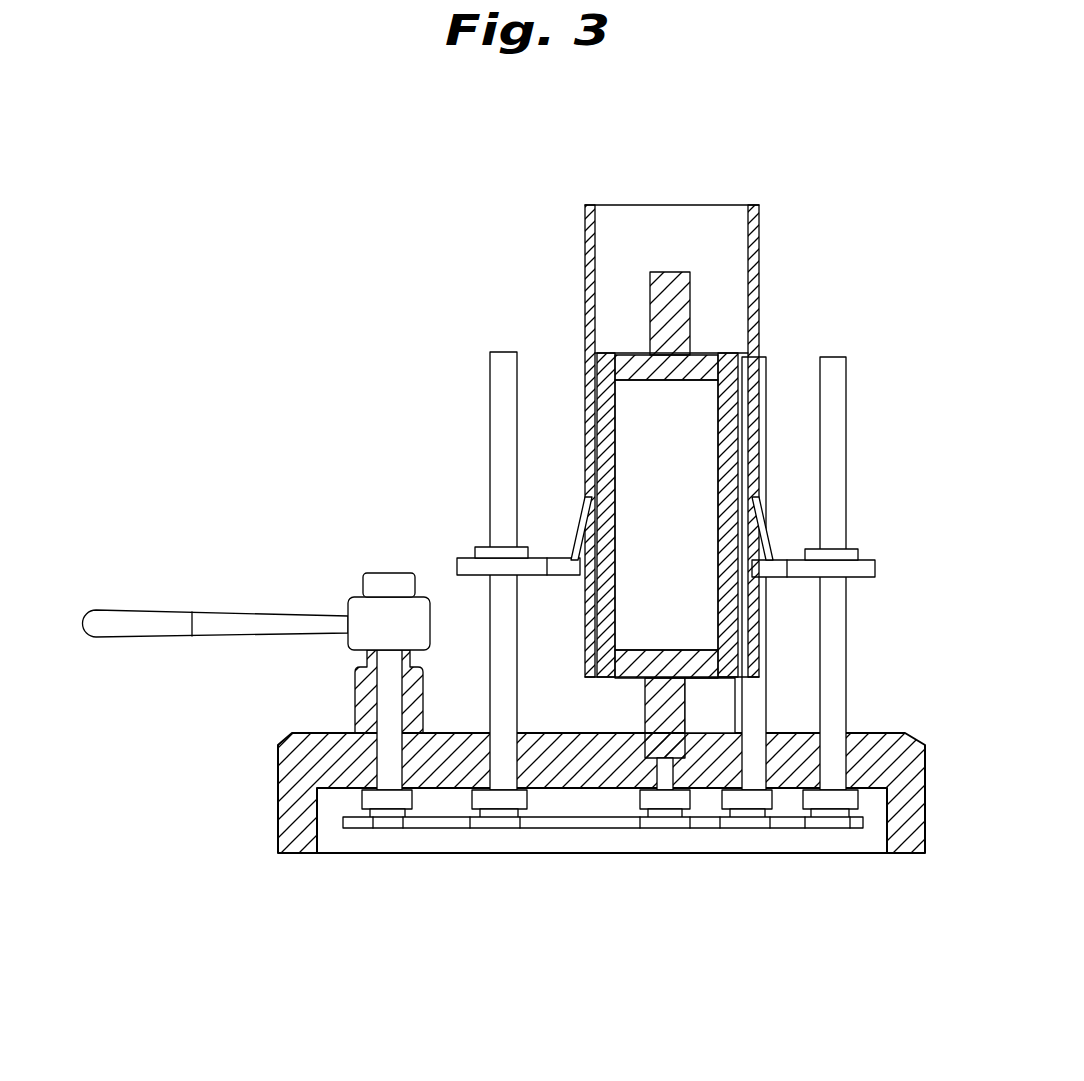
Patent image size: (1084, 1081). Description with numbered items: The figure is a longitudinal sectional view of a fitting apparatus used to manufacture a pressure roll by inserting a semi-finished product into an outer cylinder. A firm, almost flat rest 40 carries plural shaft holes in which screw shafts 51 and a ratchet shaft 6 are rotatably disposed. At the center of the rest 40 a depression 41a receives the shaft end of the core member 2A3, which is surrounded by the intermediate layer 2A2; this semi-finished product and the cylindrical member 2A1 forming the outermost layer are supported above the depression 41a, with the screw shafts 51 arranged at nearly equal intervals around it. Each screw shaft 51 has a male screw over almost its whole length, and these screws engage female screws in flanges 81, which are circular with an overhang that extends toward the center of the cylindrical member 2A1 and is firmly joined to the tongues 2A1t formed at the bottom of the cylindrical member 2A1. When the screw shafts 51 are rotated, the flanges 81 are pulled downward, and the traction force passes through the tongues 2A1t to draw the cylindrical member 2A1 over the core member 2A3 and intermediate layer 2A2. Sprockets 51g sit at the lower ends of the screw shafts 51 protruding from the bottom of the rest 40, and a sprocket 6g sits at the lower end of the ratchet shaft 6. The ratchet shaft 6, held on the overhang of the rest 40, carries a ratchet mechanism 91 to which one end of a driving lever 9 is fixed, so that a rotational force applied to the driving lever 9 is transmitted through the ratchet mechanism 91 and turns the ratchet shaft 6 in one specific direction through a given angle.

The cylindrical member 2A1 is at (590, 245).
The tongues 2A1t is at (575, 530).
The intermediate layer 2A2 is at (592, 378).
The core member 2A3 is at (697, 521).
The screw shaft 51 is at (500, 420).
The sprocket 51g is at (497, 826).
The flange 81 is at (455, 565).
The driving lever 9 is at (230, 620).
The ratchet mechanism 91 is at (345, 598).
The ratchet shaft 6 is at (385, 690).
The sprocket 6g is at (385, 826).
The rest 40 is at (300, 792).
The depression 41a is at (685, 752).